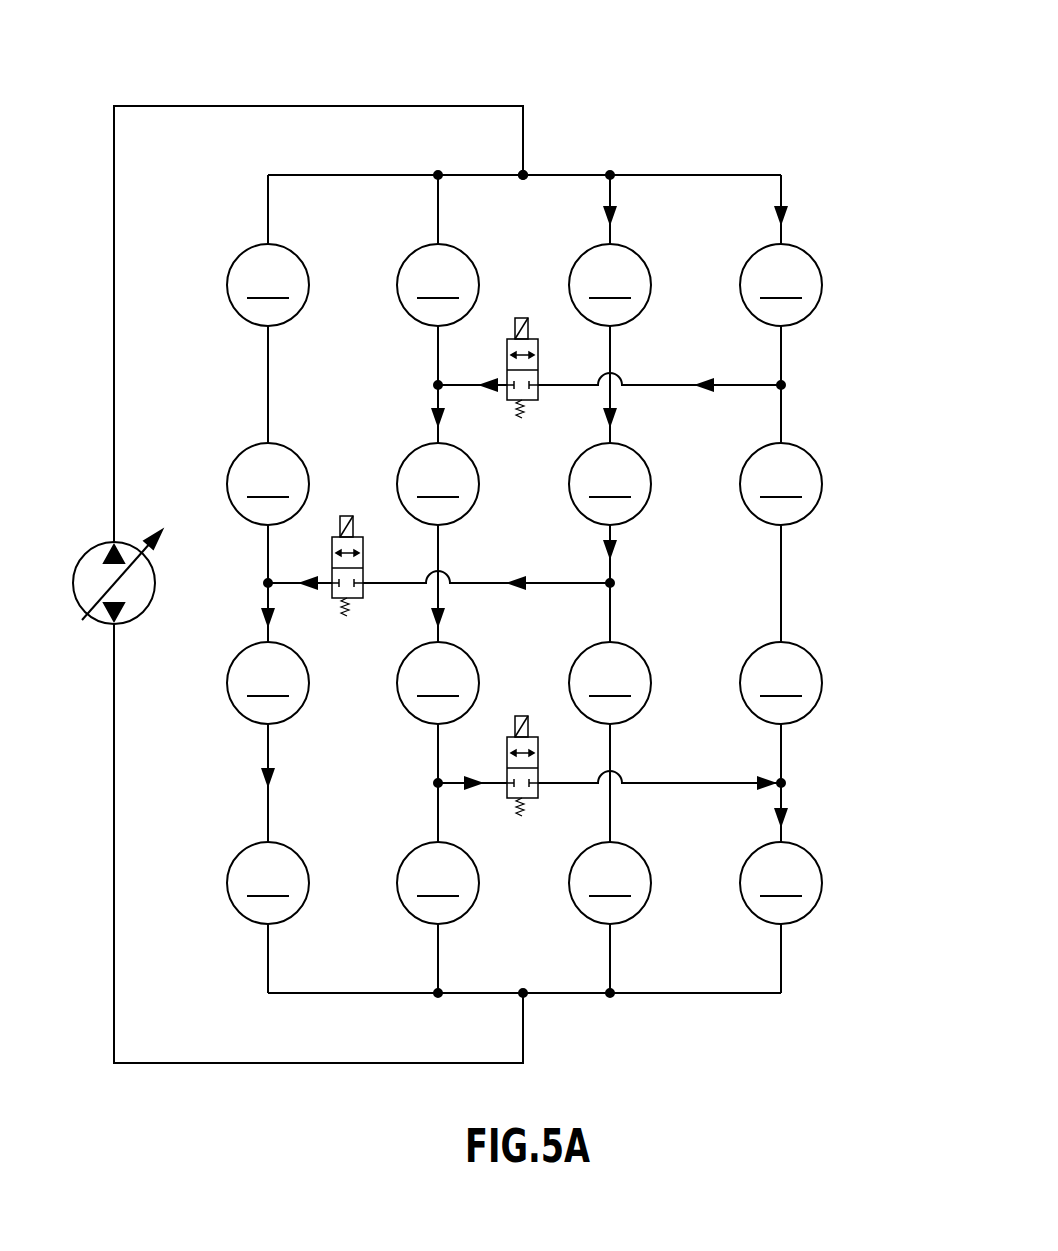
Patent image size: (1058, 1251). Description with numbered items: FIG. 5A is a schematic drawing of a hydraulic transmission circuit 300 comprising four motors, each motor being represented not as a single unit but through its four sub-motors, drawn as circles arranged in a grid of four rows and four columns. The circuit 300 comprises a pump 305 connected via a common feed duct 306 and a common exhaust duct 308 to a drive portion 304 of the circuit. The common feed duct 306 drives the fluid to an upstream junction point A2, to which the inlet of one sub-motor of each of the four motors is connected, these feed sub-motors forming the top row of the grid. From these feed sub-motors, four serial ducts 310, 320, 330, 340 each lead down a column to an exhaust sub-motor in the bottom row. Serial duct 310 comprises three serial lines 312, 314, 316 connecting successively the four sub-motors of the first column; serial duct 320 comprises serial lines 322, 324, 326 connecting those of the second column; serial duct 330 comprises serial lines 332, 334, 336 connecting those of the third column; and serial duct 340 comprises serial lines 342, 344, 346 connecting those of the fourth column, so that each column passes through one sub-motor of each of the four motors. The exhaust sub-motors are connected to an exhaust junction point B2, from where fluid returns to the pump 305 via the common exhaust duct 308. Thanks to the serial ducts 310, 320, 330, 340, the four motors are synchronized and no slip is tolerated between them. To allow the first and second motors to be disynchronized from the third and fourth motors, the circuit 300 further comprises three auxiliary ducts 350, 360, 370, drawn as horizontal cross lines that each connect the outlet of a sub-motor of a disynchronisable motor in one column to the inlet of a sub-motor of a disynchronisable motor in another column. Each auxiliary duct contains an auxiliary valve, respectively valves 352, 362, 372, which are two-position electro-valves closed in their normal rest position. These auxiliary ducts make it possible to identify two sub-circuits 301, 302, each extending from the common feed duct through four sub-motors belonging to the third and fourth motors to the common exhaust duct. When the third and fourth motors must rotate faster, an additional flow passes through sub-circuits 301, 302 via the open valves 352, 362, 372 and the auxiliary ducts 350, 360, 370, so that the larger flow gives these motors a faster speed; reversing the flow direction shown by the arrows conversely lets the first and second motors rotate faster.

The hydraulic transmission circuit 300 is at (699, 88).
The sub-circuit 301 is at (601, 214).
The sub-circuit 302 is at (773, 214).
The drive portion 304 is at (824, 556).
The pump 305 is at (150, 622).
The common feed duct 306 is at (275, 106).
The common exhaust duct 308 is at (276, 1065).
The serial duct 310 is at (272, 370).
The serial line 312 is at (267, 382).
The serial line 314 is at (267, 551).
The serial line 316 is at (267, 748).
The serial duct 320 is at (432, 350).
The serial line 322 is at (438, 435).
The serial line 324 is at (440, 545).
The serial line 326 is at (438, 748).
The serial duct 330 is at (598, 424).
The serial line 332 is at (612, 345).
The serial line 334 is at (612, 564).
The serial line 336 is at (612, 813).
The serial duct 340 is at (775, 414).
The serial line 342 is at (783, 349).
The serial line 344 is at (783, 584).
The serial line 346 is at (783, 747).
The auxiliary duct 350 is at (725, 385).
The auxiliary valve 352 is at (506, 336).
The auxiliary duct 360 is at (557, 583).
The auxiliary valve 362 is at (331, 534).
The auxiliary duct 370 is at (685, 783).
The auxiliary valve 372 is at (506, 734).
The upstream junction point A2 is at (523, 175).
The exhaust junction point B2 is at (523, 993).